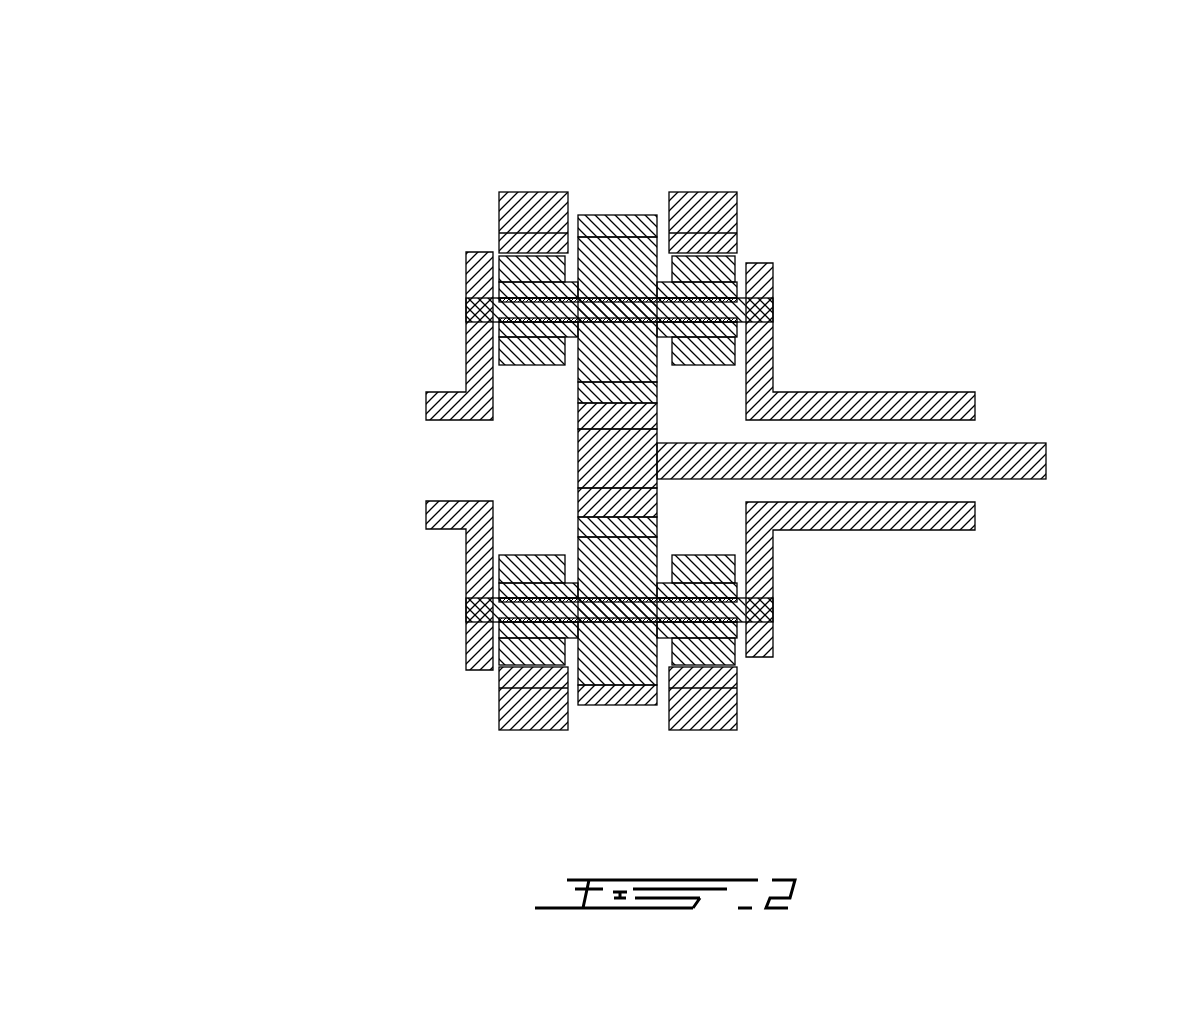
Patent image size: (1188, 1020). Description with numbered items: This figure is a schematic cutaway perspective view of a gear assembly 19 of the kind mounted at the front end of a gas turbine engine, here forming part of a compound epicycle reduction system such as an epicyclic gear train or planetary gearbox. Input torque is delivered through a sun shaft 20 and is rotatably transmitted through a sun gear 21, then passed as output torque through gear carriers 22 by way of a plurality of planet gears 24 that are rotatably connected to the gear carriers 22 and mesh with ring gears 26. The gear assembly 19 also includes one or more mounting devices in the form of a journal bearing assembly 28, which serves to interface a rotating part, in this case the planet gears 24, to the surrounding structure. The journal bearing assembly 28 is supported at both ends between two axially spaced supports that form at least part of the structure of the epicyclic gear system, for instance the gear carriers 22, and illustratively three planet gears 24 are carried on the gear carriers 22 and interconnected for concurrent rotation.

The gear assembly 19 is at (305, 152).
The sun shaft 20 is at (1028, 453).
The sun gear 21 is at (600, 465).
The gear carrier 22 is at (773, 380).
The planet gear 24 is at (690, 640).
The ring gear 26 is at (553, 205).
The journal bearing assembly 28 is at (548, 299).